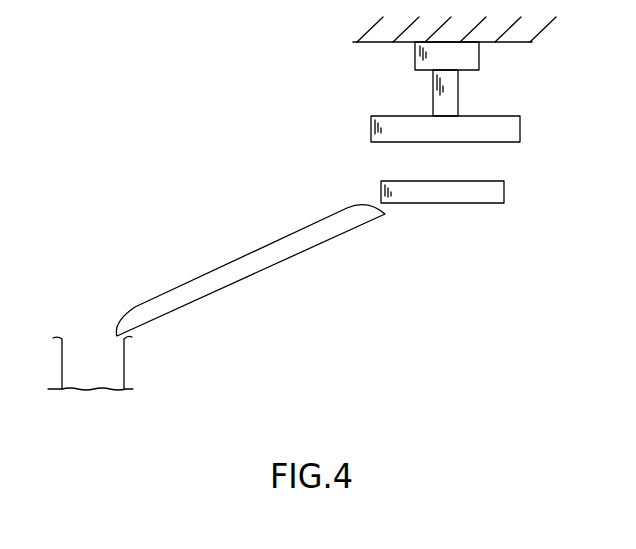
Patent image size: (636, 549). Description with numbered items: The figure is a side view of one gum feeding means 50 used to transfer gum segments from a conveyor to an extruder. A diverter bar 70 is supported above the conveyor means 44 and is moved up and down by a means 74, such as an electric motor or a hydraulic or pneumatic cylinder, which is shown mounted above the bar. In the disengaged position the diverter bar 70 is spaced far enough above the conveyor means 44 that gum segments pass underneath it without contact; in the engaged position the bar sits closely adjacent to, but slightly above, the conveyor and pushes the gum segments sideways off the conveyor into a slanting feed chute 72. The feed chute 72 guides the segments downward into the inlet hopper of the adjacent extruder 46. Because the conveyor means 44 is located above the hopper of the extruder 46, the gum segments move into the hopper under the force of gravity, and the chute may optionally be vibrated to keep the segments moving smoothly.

The feeding means 50 is at (281, 83).
The means for moving the diverter bar 74 is at (479, 62).
The diverter bar 70 is at (520, 128).
The conveyor means 44 is at (504, 190).
The feed chute 72 is at (255, 273).
The extruder 46 is at (124, 366).